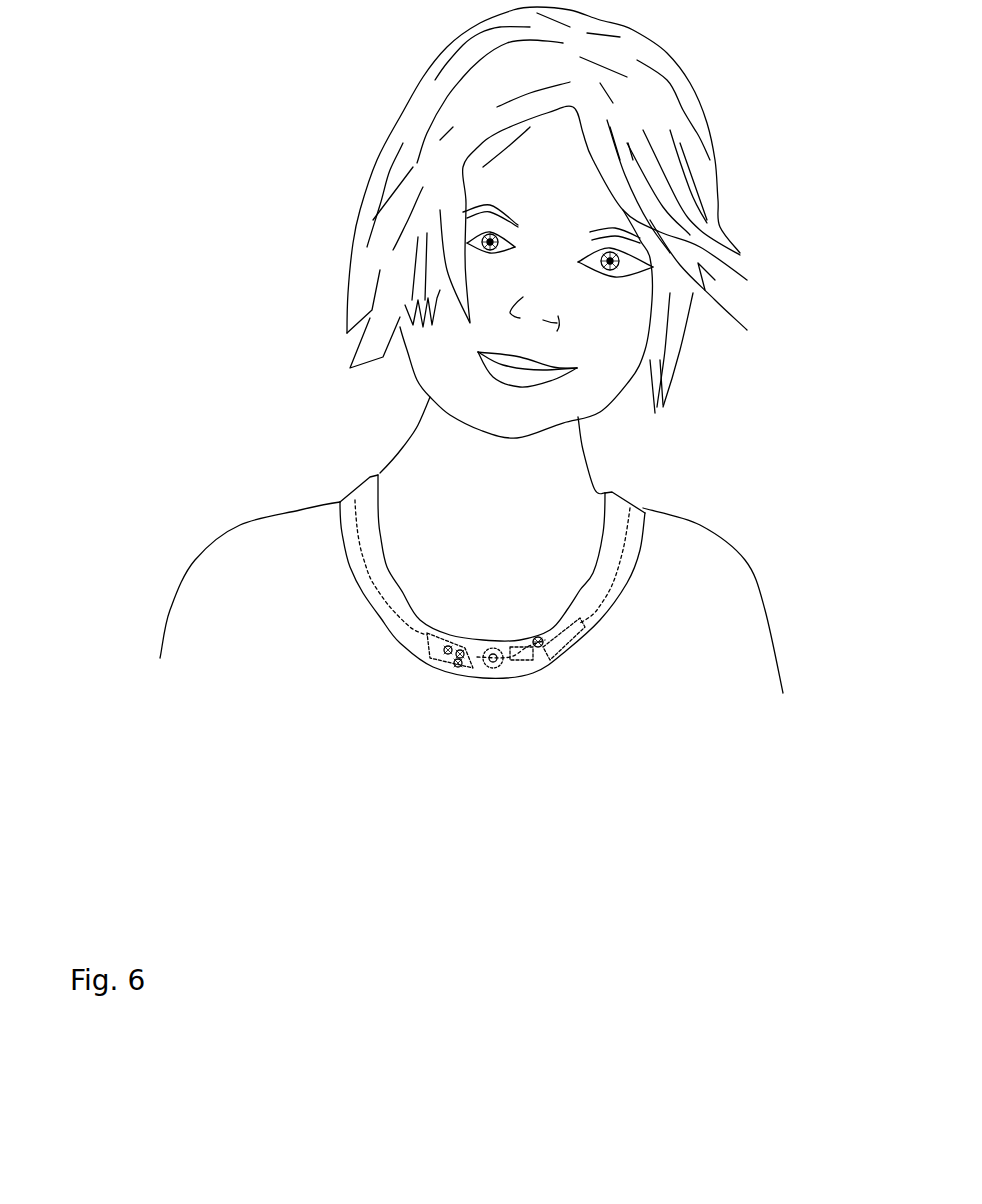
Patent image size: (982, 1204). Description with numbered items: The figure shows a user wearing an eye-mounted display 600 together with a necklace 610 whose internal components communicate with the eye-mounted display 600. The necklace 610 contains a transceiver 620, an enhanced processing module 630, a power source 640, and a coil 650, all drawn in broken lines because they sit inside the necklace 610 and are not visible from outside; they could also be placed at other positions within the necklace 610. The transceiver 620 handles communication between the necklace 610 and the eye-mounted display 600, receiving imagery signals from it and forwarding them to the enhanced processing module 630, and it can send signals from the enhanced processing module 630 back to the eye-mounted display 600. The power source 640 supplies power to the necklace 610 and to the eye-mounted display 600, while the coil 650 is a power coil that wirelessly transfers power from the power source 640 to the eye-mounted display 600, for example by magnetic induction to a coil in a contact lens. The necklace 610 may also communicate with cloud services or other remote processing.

The eye-mounted display 600 is at (607, 270).
The necklace 610 is at (368, 485).
The transceiver 620 is at (493, 668).
The enhanced processing module 630 is at (437, 647).
The power source 640 is at (560, 647).
The coil 650 is at (363, 557).